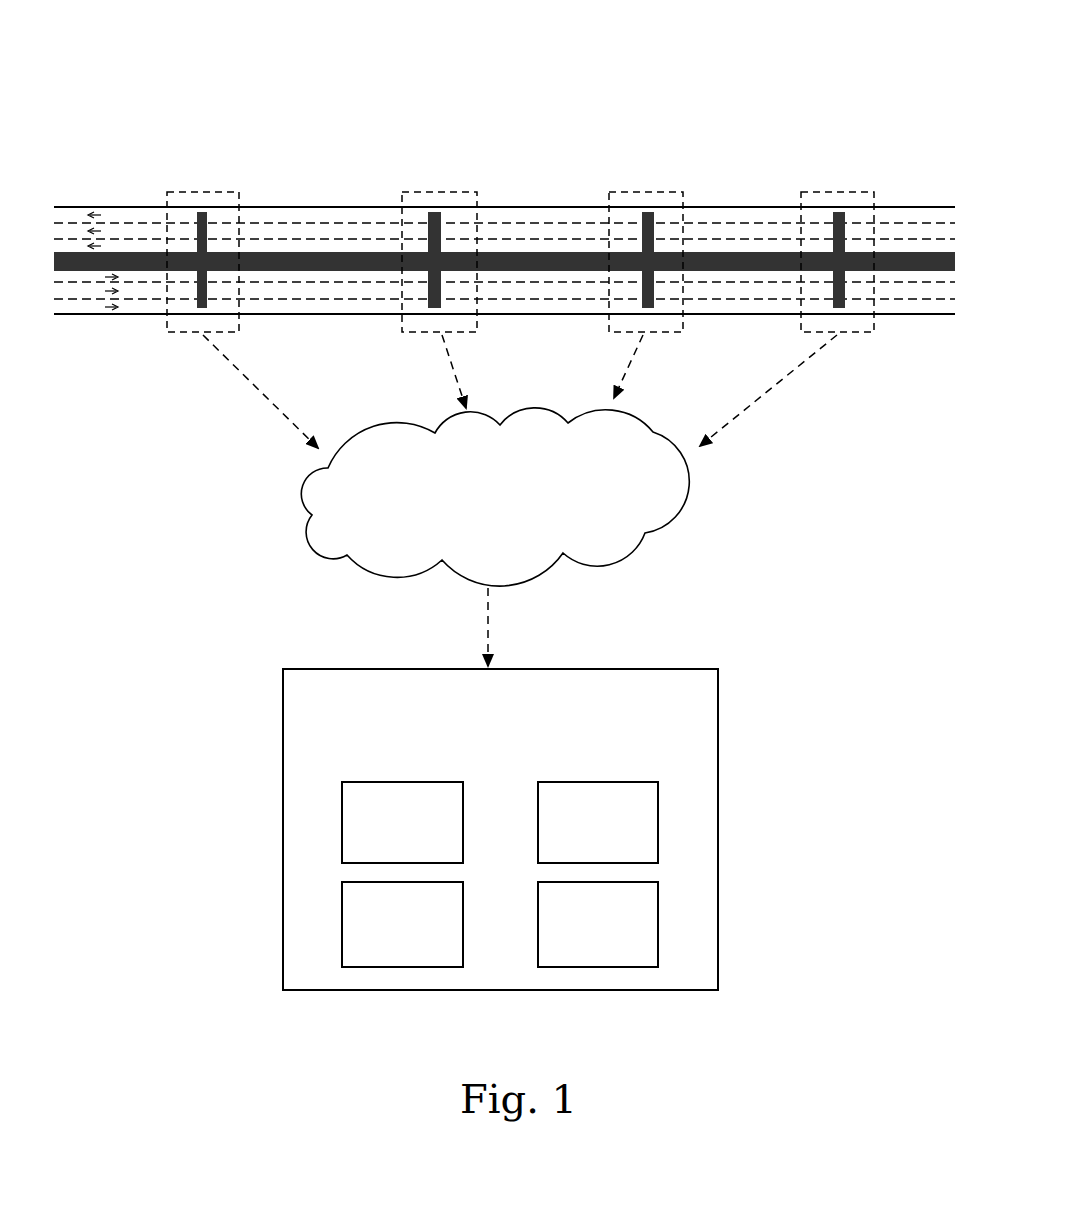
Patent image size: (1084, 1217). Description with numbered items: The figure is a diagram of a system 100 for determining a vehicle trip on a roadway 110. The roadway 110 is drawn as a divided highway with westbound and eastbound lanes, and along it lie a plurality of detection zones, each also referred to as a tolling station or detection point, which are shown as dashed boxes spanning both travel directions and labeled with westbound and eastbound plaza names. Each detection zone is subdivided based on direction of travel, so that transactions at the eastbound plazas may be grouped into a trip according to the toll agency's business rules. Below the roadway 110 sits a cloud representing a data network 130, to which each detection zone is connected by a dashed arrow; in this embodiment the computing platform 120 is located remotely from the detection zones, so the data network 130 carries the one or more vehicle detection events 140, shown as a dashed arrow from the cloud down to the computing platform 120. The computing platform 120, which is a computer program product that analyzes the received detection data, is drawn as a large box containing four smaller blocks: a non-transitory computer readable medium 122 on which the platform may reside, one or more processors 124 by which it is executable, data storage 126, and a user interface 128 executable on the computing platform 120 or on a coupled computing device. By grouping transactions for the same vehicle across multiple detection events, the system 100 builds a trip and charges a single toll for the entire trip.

The system 100 is at (686, 70).
The roadway 110 is at (92, 322).
The computing platform 120 is at (471, 764).
The non-transitory computer readable medium 122 is at (373, 842).
The processor 124 is at (569, 842).
The data storage 126 is at (373, 944).
The user interface 128 is at (569, 944).
The data network 130 is at (451, 534).
The vehicle detection event 140 is at (512, 627).